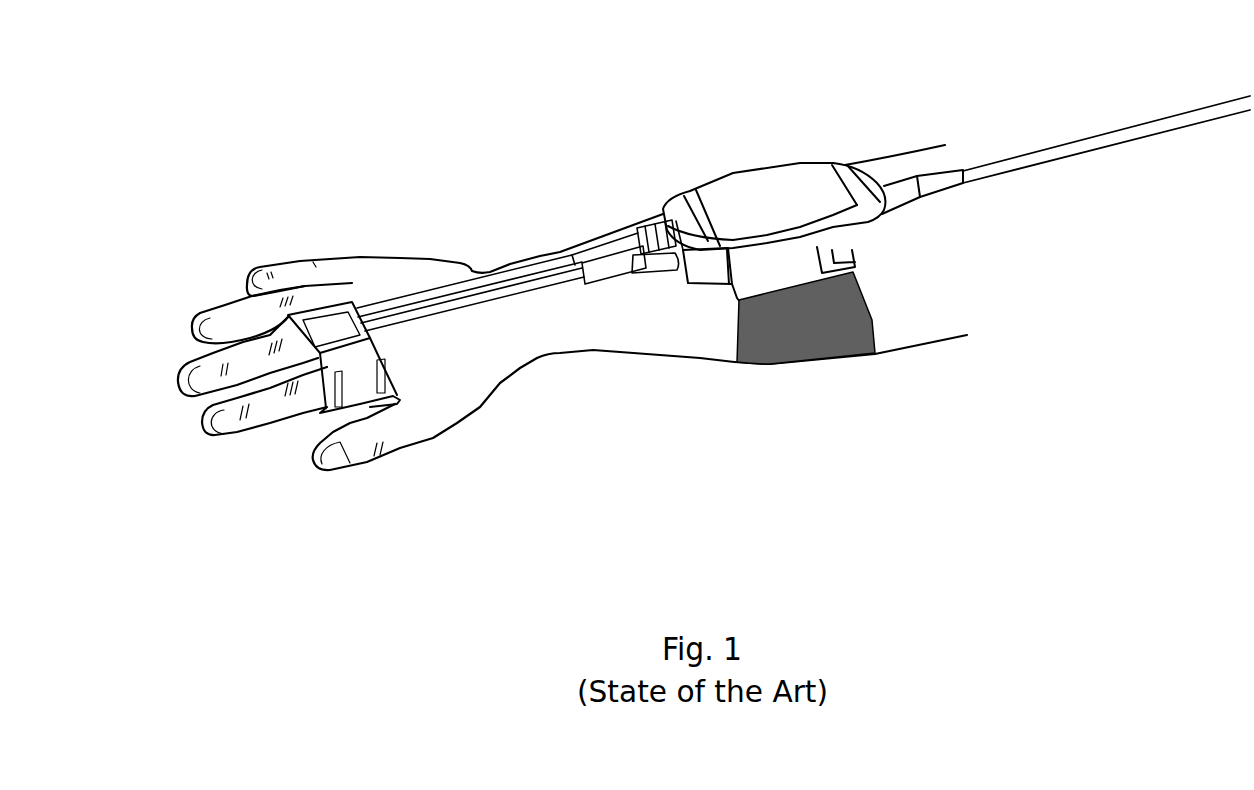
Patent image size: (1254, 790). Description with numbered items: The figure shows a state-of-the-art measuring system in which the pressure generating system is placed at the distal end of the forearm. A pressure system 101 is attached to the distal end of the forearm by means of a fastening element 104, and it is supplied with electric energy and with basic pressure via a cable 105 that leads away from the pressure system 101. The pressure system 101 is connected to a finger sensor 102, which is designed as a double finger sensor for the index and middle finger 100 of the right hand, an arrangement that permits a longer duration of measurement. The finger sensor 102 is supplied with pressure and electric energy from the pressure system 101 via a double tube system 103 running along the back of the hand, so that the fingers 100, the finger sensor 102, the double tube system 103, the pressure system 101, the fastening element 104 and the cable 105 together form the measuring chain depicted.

The index and middle finger 100 is at (245, 358).
The pressure system 101 is at (753, 193).
The finger sensor 102 is at (332, 323).
The double tube system 103 is at (511, 276).
The fastening element 104 is at (808, 342).
The cable 105 is at (1095, 142).